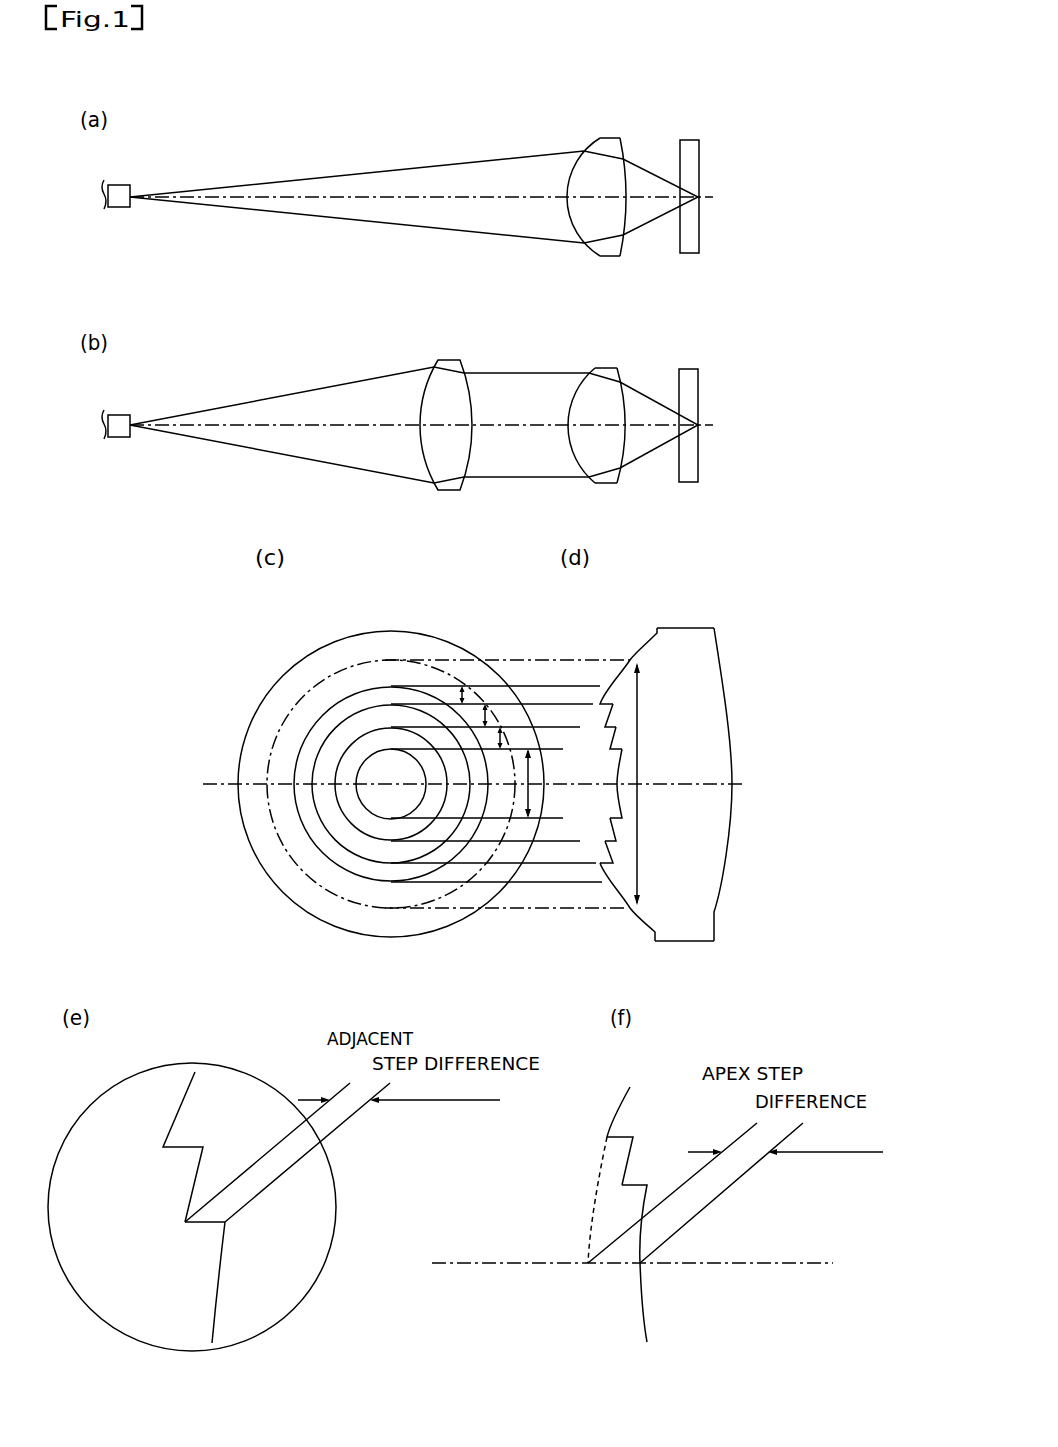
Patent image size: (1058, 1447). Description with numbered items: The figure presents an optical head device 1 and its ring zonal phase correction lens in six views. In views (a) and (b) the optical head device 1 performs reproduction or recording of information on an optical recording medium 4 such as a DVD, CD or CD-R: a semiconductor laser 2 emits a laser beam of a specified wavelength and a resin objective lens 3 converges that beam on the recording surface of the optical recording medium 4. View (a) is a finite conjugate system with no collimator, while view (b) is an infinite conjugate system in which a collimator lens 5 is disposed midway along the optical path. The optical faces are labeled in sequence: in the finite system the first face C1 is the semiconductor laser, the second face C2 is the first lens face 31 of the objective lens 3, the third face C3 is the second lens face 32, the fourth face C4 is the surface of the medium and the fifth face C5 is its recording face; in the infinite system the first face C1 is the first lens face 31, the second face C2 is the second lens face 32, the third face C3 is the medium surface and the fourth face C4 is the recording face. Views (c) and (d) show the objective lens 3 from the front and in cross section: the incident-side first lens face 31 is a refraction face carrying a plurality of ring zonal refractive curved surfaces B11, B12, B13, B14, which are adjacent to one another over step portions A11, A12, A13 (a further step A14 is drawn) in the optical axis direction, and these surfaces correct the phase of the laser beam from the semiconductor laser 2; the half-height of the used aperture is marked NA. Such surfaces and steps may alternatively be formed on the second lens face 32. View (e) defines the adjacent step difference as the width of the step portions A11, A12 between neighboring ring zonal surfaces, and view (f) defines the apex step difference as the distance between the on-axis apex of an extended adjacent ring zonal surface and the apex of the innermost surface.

The optical head device 1 is at (240, 162).
The semiconductor laser 2 is at (118, 185).
The objective lens 3 is at (434, 709).
The optical recording medium 4 is at (689, 140).
The collimator lens 5 is at (452, 360).
The first lens face 31 is at (577, 151).
The second lens face 32 is at (623, 168).
The step portion A11 is at (357, 768).
The step portion A12 is at (332, 795).
The step portion A13 is at (323, 825).
The fourth ring zone A14 is at (342, 867).
The ring zonal refractive curved surface B11 is at (533, 792).
The ring zonal refractive curved surface B12 is at (505, 738).
The ring zonal refractive curved surface B13 is at (490, 718).
The ring zonal refractive curved surface B14 is at (470, 697).
The first face C1 is at (132, 205).
The second face C2 is at (572, 224).
The third face C3 is at (623, 227).
The fourth face C4 is at (681, 227).
The fifth face C5 is at (700, 220).
The numerical aperture NA is at (656, 784).